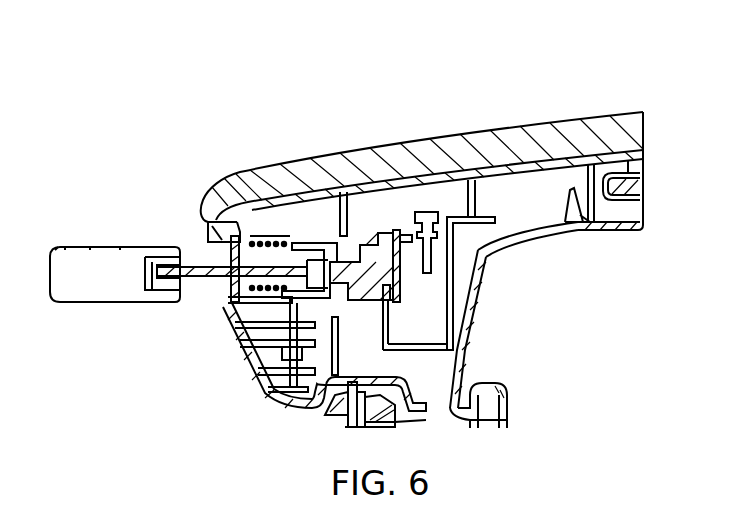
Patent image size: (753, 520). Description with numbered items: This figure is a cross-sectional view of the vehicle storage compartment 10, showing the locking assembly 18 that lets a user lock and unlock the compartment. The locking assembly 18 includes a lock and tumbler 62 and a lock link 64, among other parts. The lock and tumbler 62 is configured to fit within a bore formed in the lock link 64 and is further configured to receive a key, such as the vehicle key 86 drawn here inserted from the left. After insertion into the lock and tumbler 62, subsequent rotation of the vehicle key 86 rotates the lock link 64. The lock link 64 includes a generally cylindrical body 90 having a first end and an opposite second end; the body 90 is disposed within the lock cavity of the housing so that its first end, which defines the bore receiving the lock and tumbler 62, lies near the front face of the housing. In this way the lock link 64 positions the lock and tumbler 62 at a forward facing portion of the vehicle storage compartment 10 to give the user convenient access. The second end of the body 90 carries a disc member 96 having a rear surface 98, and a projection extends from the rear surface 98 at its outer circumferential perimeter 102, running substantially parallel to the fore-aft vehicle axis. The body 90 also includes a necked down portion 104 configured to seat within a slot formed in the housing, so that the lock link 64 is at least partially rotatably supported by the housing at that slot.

The vehicle storage compartment 10 is at (603, 86).
The locking assembly 18 is at (482, 120).
The lock and tumbler 62 is at (292, 228).
The lock link 64 is at (192, 240).
The vehicle key 86 is at (100, 246).
The body 90 is at (380, 305).
The disc member 96 is at (394, 232).
The rear surface 98 is at (400, 268).
The outer circumferential perimeter 102 is at (400, 286).
The necked down portion 104 is at (388, 232).